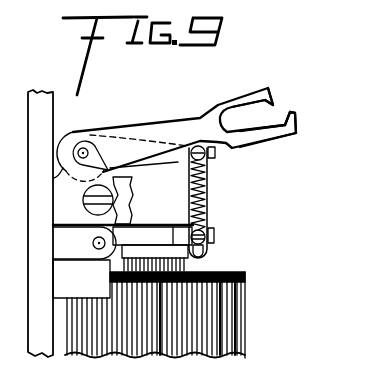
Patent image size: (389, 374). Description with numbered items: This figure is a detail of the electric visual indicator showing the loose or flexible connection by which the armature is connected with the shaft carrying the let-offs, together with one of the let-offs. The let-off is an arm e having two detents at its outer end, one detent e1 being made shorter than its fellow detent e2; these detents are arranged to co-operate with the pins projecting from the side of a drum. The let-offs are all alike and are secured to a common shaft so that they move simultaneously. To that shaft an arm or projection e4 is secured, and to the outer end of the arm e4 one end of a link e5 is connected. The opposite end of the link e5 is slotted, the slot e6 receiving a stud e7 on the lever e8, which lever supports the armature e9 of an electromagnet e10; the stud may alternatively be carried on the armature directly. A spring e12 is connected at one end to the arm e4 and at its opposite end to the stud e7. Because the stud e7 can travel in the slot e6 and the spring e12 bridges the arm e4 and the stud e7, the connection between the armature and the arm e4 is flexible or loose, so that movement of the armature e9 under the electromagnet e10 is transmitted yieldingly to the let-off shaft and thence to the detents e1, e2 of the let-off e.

The let-off arm e is at (172, 124).
The shorter detent e1 is at (258, 92).
The detent e2 is at (263, 135).
The arm or projection e4 is at (178, 157).
The link e5 is at (207, 202).
The slot e6 is at (207, 253).
The stud e7 is at (210, 232).
The lever e8 is at (215, 237).
The armature e9 is at (150, 252).
The electromagnet e10 is at (233, 318).
The spring e12 is at (206, 184).